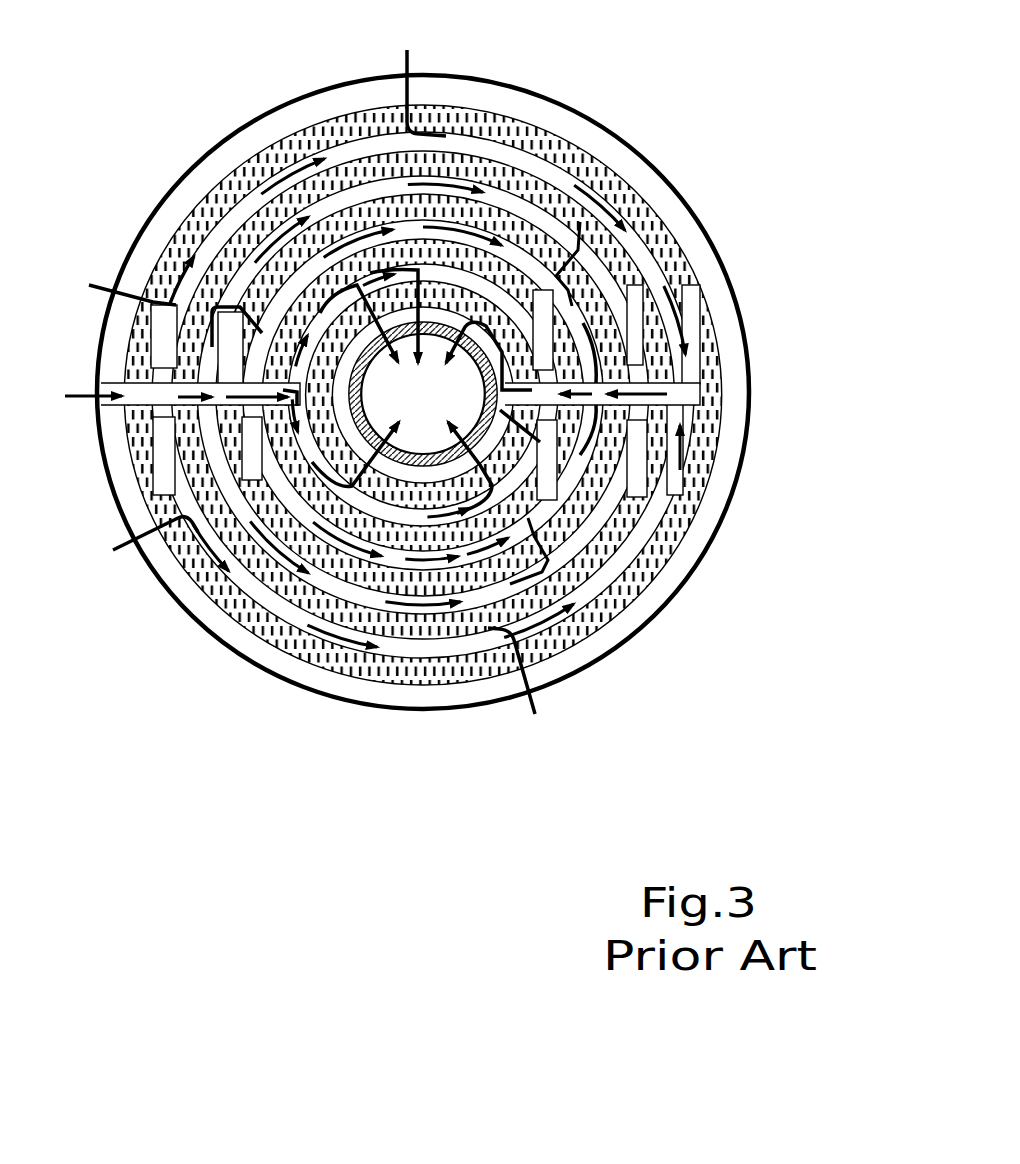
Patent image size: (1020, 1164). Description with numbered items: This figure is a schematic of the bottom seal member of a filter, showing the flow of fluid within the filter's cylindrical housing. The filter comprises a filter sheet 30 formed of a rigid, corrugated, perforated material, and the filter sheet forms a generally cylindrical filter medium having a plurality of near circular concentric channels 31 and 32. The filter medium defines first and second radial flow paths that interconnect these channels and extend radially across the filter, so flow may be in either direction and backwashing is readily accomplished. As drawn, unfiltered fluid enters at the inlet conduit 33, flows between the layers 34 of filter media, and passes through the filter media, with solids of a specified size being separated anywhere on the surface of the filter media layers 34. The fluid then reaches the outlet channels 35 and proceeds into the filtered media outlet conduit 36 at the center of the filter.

The filter sheet 30 is at (662, 241).
The near circular concentric channel 31 is at (257, 433).
The near circular concentric channel 32 is at (490, 478).
The inlet conduit 33 is at (118, 388).
The layers of filter media 34 is at (556, 198).
The outlet channel 35 is at (683, 390).
The filtered media outlet conduit 36 is at (450, 411).